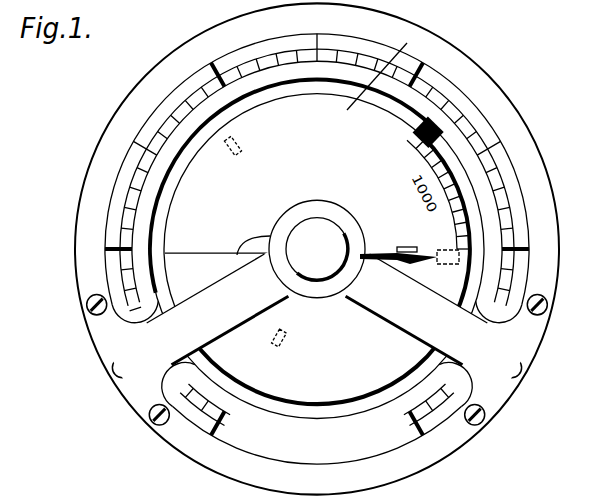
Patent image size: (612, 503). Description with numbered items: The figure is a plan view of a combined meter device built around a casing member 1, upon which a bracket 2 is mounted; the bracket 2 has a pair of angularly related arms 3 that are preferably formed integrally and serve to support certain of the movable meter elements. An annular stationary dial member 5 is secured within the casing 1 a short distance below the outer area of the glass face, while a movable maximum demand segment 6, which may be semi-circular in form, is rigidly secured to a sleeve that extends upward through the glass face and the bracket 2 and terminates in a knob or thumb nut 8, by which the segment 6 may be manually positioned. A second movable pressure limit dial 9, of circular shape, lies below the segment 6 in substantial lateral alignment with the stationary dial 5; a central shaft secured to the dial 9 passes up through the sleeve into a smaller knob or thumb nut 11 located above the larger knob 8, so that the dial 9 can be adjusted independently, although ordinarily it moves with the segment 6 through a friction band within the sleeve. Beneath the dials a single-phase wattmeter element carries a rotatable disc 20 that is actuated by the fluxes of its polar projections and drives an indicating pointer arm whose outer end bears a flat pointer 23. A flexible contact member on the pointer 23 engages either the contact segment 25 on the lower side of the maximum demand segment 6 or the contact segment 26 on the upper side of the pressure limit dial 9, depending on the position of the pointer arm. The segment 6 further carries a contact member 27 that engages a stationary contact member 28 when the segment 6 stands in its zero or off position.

The casing member 1 is at (82, 195).
The bracket 2 is at (214, 283).
The angularly related arms 3 is at (245, 316).
The annular stationary dial member 5 is at (176, 101).
The movable dial or maximum demand segment 6 is at (366, 242).
The knob or thumb nut 8 is at (331, 299).
The pressure limit dial 9 is at (407, 43).
The knob or thumb nut 11 is at (304, 284).
The rotatable disc 20 is at (450, 241).
The flat pointer 23 is at (441, 129).
The contact segment 25 is at (448, 265).
The contact segment 26 is at (231, 155).
The contact member 27 is at (407, 247).
The stationary contact member 28 is at (281, 346).